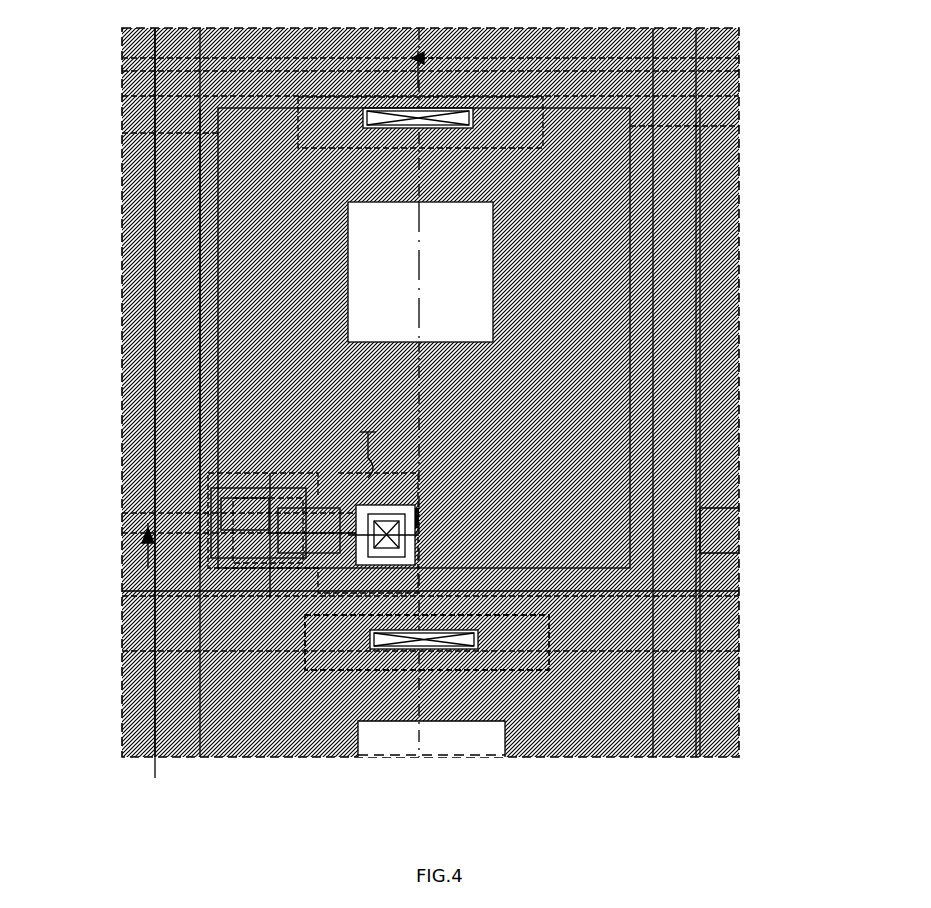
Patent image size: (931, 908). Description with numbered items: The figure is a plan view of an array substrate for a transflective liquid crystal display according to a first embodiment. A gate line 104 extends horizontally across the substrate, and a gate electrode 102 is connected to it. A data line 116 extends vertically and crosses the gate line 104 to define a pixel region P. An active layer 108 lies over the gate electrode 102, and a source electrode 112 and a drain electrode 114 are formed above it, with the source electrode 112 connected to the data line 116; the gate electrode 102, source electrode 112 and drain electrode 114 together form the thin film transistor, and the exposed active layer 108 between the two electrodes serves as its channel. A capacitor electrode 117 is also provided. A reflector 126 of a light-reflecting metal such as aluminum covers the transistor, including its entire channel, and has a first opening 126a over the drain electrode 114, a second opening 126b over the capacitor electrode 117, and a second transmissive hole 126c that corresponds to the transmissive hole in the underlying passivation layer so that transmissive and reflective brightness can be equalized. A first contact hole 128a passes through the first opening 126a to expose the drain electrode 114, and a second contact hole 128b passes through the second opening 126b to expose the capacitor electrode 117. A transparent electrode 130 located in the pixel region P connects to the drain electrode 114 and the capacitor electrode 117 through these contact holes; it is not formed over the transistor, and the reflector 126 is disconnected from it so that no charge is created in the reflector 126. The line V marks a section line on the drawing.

The gate electrode 102 is at (265, 470).
The gate line 104 is at (715, 530).
The active layer 108 is at (262, 580).
The source electrode 112 is at (235, 502).
The drain electrode 114 is at (412, 524).
The data line 116 is at (692, 374).
The capacitor electrode 117 is at (455, 665).
The reflector 126 is at (205, 305).
The first opening 126a is at (412, 505).
The second opening 126b is at (476, 627).
The second transmissive hole 126c is at (478, 224).
The first contact hole 128a is at (378, 542).
The second contact hole 128b is at (396, 641).
The transparent electrode 130 is at (210, 232).
The pixel region P is at (648, 312).
The virtual line V is at (731, 50).